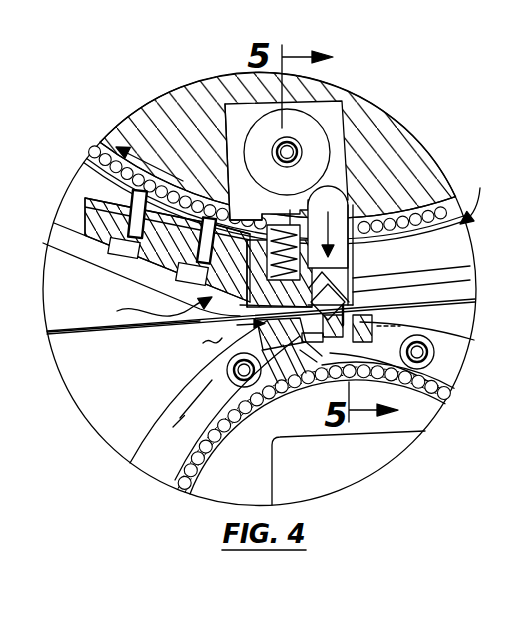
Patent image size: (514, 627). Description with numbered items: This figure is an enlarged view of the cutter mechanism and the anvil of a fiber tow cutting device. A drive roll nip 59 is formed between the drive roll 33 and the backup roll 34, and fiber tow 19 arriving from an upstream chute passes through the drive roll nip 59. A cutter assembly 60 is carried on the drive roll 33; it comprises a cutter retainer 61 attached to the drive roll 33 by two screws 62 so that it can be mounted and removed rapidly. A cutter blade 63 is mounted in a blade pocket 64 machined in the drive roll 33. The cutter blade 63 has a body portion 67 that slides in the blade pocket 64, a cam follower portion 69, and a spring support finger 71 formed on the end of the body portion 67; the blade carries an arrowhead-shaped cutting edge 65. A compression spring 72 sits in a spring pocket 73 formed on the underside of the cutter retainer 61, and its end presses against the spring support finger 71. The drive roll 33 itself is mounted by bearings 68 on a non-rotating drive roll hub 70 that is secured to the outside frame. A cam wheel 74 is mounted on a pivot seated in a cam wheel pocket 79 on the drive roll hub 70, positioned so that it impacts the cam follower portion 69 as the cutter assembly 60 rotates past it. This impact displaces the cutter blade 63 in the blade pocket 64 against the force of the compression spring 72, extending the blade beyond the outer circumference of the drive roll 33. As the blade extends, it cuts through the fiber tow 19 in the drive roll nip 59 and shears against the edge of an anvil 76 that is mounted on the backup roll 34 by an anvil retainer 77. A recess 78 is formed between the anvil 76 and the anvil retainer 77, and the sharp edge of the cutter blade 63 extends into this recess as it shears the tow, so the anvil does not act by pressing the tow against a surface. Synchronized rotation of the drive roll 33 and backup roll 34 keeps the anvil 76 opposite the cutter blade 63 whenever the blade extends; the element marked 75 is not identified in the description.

The fiber tow 19 is at (130, 322).
The drive roll 33 is at (475, 197).
The backup roll 34 is at (437, 367).
The drive roll nip 59 is at (223, 338).
The cutter assembly 60 is at (153, 310).
The cutter retainer 61 is at (97, 268).
The screws 62 is at (143, 260).
The cutter blade 63 is at (350, 275).
The blade pocket 64 is at (397, 213).
The cutting edge 65 is at (345, 295).
The body portion 67 is at (338, 230).
The bearings 68 is at (100, 162).
The cam follower portion 69 is at (342, 183).
The drive roll hub 70 is at (173, 110).
The spring support finger 71 is at (243, 187).
The compression spring 72 is at (262, 250).
The spring pocket 73 is at (270, 222).
The cam wheel 74 is at (252, 143).
The pin 75 is at (289, 153).
The anvil 76 is at (402, 306).
The anvil retainer 77 is at (343, 322).
The recess 78 is at (454, 306).
The cam wheel pocket 79 is at (238, 162).